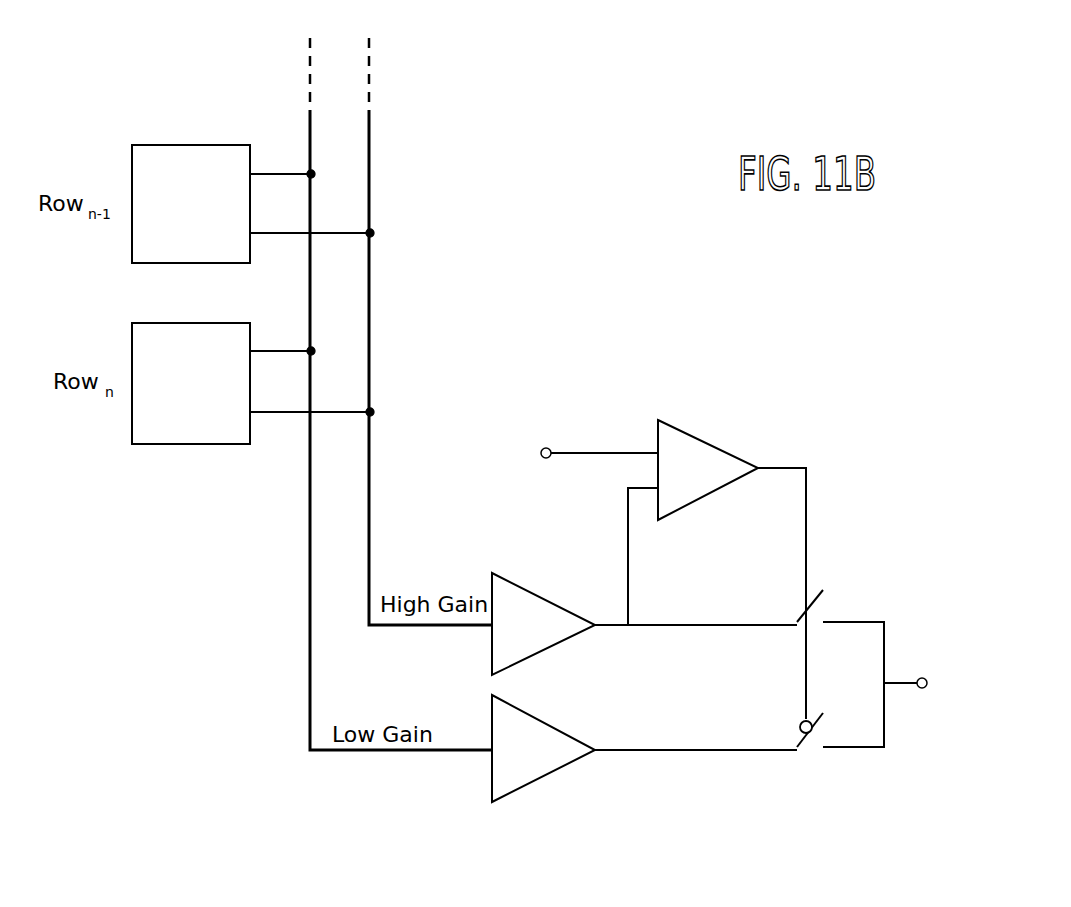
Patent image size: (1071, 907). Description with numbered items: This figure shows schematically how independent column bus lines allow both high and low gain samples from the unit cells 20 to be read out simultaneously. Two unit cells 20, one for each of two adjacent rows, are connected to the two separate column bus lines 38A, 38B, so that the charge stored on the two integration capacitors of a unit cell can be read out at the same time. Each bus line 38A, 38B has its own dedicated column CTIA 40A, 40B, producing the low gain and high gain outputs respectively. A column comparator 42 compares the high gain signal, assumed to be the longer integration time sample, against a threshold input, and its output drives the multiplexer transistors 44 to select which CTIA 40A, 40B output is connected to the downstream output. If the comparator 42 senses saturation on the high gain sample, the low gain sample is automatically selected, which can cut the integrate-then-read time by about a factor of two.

The unit cell 20 is at (253, 294).
The column bus line 38A is at (312, 290).
The column bus line 38B is at (373, 205).
The column CTIA 40A is at (514, 588).
The column CTIA 40B is at (533, 717).
The comparator 42 is at (707, 498).
The multiplexer transistors 44 is at (818, 635).